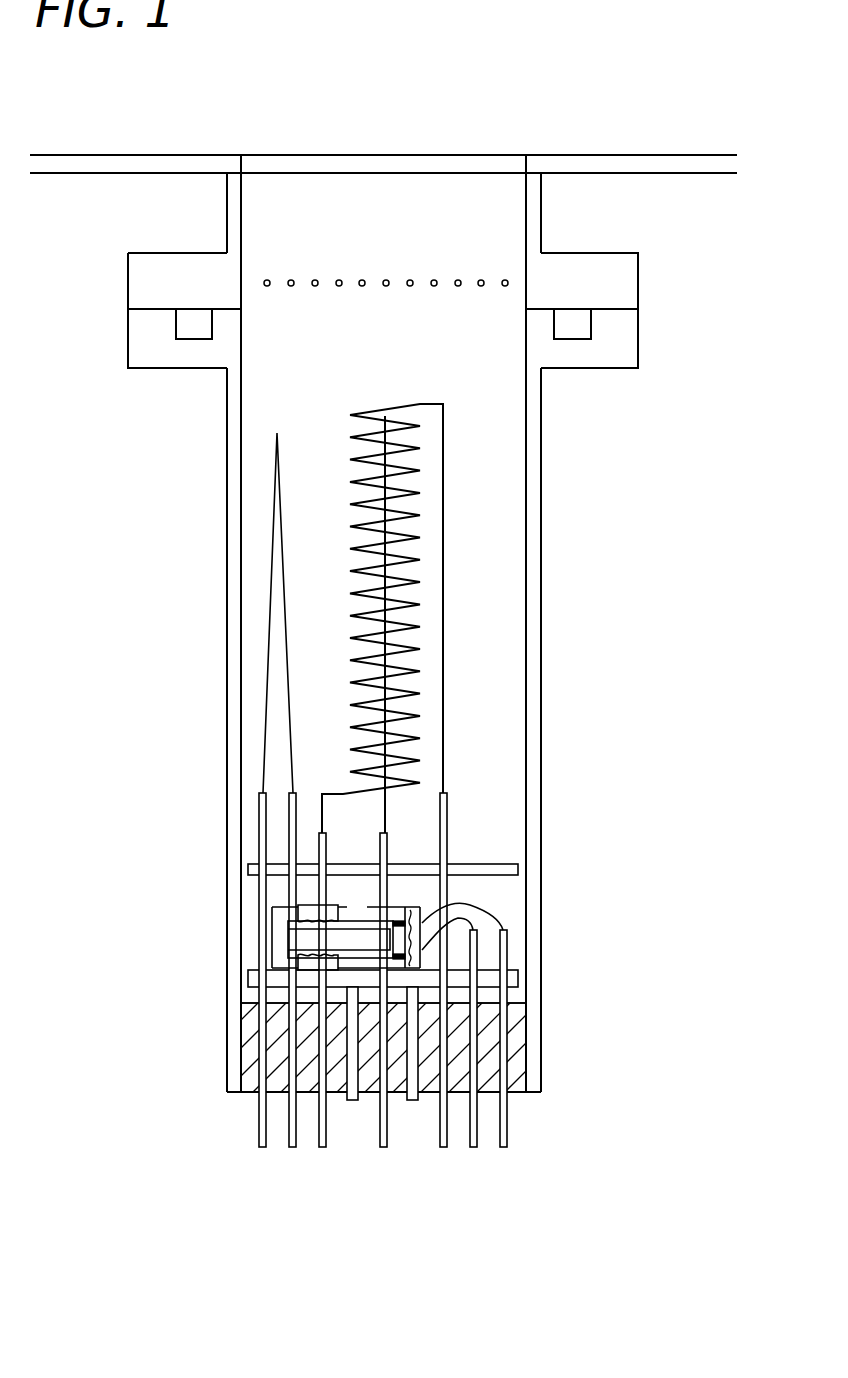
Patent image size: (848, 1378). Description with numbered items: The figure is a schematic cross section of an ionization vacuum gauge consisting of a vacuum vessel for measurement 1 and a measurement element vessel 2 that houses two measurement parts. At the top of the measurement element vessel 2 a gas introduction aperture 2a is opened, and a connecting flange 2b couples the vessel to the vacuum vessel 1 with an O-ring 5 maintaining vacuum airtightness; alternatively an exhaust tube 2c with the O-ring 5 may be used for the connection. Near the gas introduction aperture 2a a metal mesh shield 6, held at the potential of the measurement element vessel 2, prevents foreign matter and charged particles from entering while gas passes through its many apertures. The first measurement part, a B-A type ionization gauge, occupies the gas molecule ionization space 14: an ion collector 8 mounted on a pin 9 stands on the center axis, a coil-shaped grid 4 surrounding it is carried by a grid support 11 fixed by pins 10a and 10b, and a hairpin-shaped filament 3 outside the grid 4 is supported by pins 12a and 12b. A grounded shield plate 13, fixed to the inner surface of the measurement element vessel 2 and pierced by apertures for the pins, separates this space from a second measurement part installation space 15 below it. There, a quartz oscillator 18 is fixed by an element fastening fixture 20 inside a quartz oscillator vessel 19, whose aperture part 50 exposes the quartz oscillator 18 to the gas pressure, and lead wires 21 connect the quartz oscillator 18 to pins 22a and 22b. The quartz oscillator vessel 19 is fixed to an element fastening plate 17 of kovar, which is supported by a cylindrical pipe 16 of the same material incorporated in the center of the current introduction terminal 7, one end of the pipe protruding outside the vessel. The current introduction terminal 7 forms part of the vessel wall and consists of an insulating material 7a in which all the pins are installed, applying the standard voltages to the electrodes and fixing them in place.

The vacuum vessel for measurement 1 is at (675, 173).
The measurement element vessel 2 is at (541, 588).
The gas introduction aperture 2a is at (315, 247).
The connecting flange 2b is at (618, 338).
The exhaust tube 2c is at (535, 408).
The filament 3 is at (275, 488).
The grid 4 is at (350, 525).
The O-ring 5 is at (567, 332).
The shield 6 is at (389, 282).
The current introduction terminal 7 is at (527, 1092).
The insulating material 7a is at (526, 1057).
The ion collector 8 is at (385, 812).
The pin 9 is at (383, 1147).
The pin 10a is at (322, 1147).
The pin 10b is at (443, 1147).
The grid support 11 is at (443, 650).
The pin 12a is at (262, 1147).
The pin 12b is at (292, 1147).
The shield plate 13 is at (518, 868).
The gas molecule ionization space 14 is at (497, 691).
The second measurement part installation space 15 is at (510, 897).
The cylindrical pipe 16 is at (352, 1100).
The element fastening plate 17 is at (250, 975).
The quartz oscillator 18 is at (290, 953).
The quartz oscillator vessel 19 is at (290, 935).
The element fastening fixture 20 is at (290, 912).
The lead wires 21 is at (505, 929).
The pin 22a is at (473, 1147).
The pin 22b is at (503, 1147).
The aperture part 50 is at (357, 905).